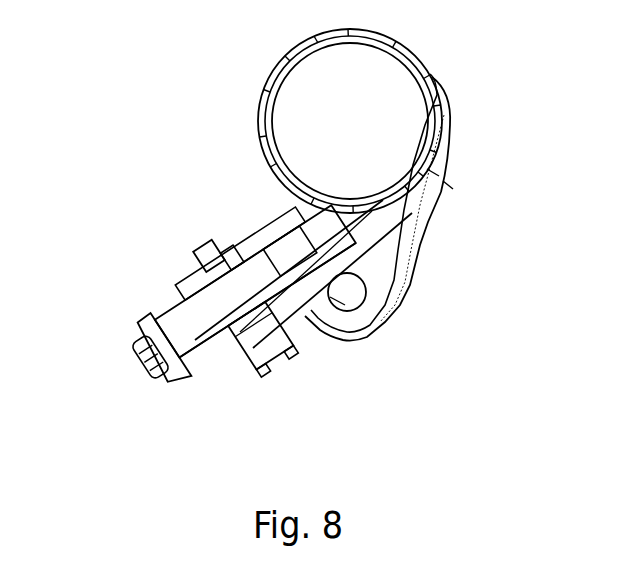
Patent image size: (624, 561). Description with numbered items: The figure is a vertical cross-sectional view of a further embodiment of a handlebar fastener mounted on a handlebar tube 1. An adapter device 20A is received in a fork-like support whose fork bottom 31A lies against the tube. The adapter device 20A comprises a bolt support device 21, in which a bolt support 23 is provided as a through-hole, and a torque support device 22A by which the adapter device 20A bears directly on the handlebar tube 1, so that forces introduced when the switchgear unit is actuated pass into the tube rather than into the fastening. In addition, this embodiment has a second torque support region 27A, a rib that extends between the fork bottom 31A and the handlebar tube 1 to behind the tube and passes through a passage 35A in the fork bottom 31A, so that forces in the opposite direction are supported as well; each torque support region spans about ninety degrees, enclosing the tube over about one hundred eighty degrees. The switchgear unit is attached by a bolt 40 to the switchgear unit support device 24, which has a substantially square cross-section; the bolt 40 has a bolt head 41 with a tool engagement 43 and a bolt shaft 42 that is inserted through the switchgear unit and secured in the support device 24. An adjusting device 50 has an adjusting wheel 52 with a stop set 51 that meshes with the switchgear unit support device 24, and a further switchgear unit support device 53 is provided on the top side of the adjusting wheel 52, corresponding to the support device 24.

The handlebar tube 1 is at (392, 48).
The second torque support region 27A is at (440, 90).
The passage 35A is at (436, 174).
The fork bottom 31A is at (447, 188).
The torque support device 22A is at (360, 240).
The adapter device 20A is at (378, 287).
The bolt support device 21 is at (372, 338).
The bolt support 23 is at (340, 302).
The switchgear unit support device 24 is at (343, 332).
The adjusting device 50 is at (290, 352).
The stop set 51 is at (231, 252).
The adjusting wheel 52 is at (201, 244).
The switchgear unit support device 53 is at (189, 279).
The bolt 40 is at (198, 312).
The bolt head 41 is at (142, 333).
The bolt shaft 42 is at (196, 343).
The tool engagement 43 is at (140, 360).